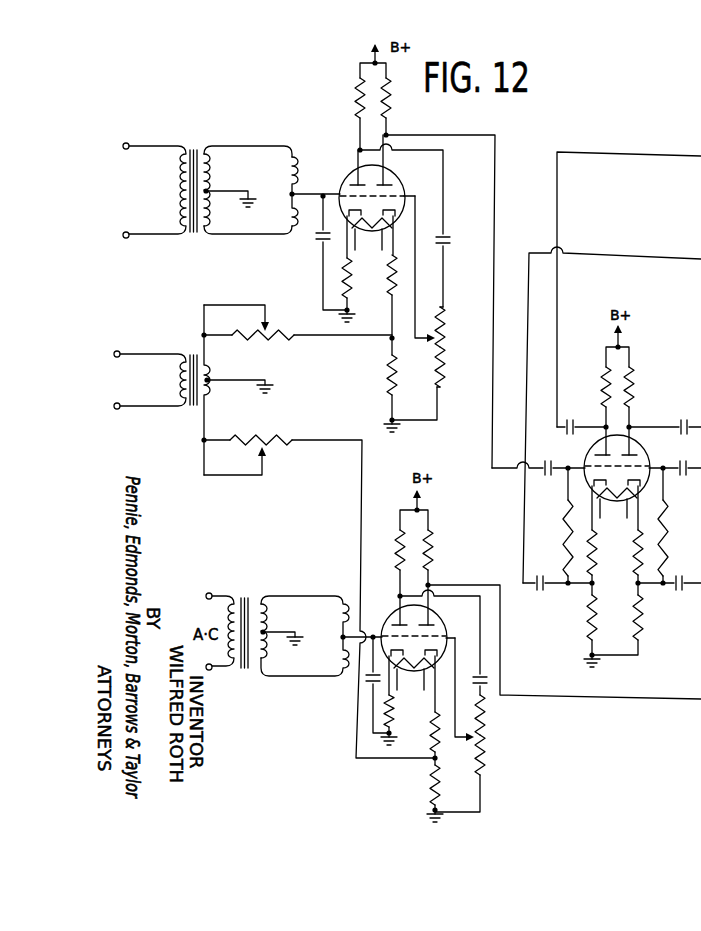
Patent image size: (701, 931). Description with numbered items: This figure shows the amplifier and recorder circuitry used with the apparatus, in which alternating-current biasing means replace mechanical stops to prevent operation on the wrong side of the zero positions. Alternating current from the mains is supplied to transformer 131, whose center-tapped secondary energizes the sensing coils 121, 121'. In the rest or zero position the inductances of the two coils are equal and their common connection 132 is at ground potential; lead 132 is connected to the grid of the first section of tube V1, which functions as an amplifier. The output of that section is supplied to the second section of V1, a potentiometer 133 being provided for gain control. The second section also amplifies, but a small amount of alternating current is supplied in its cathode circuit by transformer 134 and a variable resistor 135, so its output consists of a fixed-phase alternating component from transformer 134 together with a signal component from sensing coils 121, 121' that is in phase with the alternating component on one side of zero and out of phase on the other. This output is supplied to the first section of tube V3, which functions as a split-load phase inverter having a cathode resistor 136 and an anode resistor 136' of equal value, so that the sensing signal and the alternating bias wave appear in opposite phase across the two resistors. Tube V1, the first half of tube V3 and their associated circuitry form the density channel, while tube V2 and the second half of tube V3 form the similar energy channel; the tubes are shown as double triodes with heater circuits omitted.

The transformer 131 is at (196, 141).
The sensing coil 121 is at (270, 174).
The sensing coil 121' is at (272, 215).
The common connection 132 is at (299, 193).
The potentiometer 133 is at (444, 338).
The transformer 134 is at (187, 344).
The variable resistor 135 is at (269, 343).
The cathode resistor 136 is at (565, 627).
The anode resistor 136' is at (584, 387).
The tube V1 is at (351, 172).
The tube V2 is at (396, 613).
The tube V3 is at (591, 461).